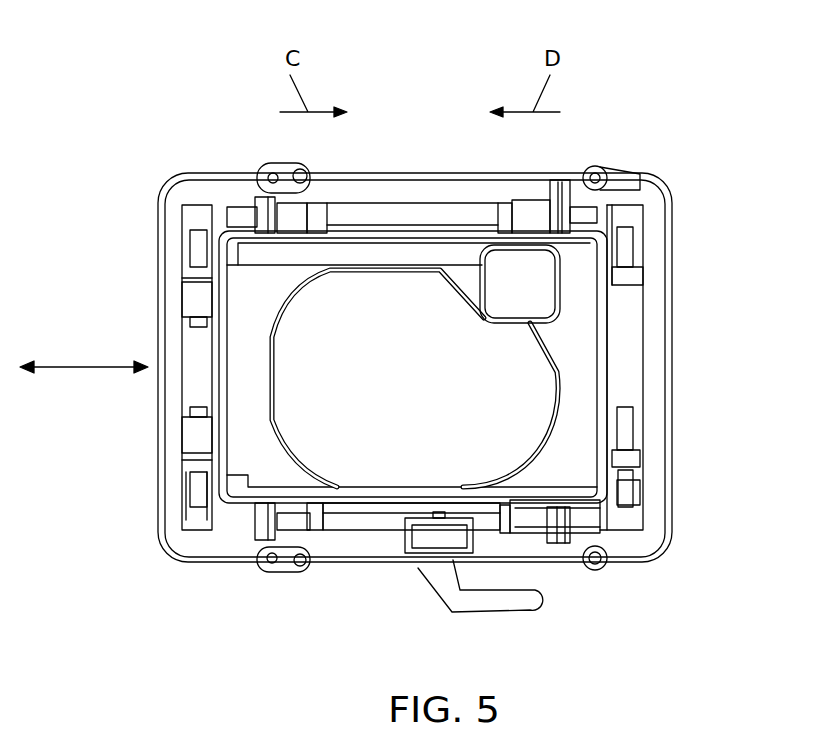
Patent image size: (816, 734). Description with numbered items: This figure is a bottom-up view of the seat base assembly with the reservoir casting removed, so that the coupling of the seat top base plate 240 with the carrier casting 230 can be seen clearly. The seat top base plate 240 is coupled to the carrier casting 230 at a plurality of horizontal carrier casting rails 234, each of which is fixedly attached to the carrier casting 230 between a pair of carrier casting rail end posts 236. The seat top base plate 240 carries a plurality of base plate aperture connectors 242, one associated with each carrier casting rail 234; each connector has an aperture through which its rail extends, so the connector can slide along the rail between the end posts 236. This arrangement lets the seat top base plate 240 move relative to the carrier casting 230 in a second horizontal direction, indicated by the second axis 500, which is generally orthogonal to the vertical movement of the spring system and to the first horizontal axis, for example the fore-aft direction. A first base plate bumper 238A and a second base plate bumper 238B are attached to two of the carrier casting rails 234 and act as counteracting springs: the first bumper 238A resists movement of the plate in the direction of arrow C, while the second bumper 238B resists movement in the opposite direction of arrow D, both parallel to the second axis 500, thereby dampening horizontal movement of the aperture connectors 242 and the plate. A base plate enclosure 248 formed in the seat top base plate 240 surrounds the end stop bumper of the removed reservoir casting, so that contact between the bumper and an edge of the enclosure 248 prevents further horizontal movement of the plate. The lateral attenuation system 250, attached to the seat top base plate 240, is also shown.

The second axis 500 is at (78, 362).
The seat top base plate 240 is at (173, 350).
The carrier casting 230 is at (215, 353).
The carrier casting rail end posts 236 is at (327, 217).
The horizontal carrier casting rails 234 is at (237, 212).
The base plate aperture connectors 242 is at (262, 212).
The first base plate bumper 238A is at (288, 208).
The second base plate bumper 238B is at (540, 207).
The base plate enclosure 248 is at (506, 297).
The lateral attenuation system 250 is at (413, 571).